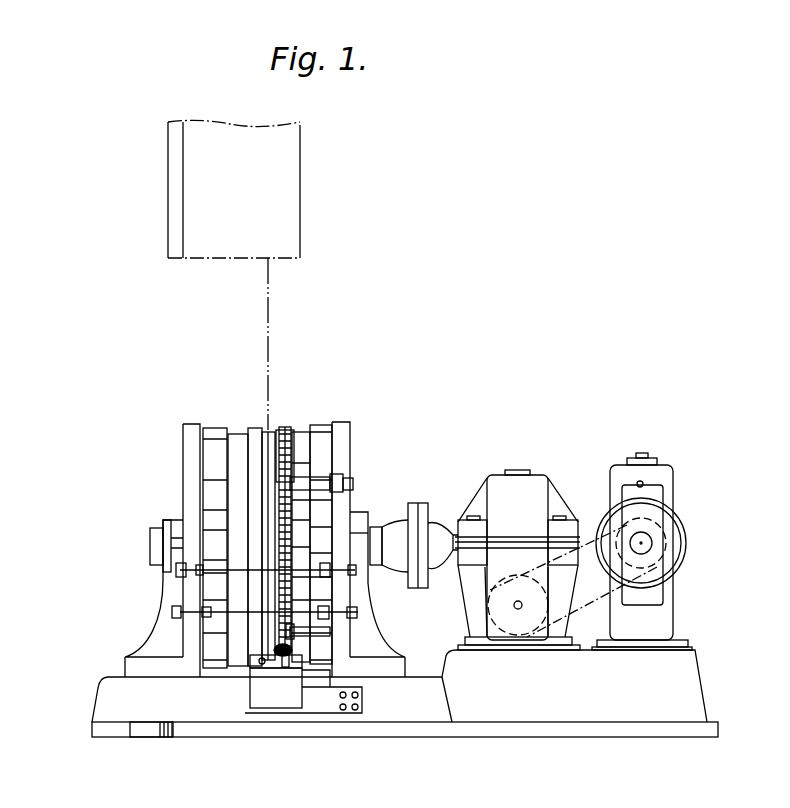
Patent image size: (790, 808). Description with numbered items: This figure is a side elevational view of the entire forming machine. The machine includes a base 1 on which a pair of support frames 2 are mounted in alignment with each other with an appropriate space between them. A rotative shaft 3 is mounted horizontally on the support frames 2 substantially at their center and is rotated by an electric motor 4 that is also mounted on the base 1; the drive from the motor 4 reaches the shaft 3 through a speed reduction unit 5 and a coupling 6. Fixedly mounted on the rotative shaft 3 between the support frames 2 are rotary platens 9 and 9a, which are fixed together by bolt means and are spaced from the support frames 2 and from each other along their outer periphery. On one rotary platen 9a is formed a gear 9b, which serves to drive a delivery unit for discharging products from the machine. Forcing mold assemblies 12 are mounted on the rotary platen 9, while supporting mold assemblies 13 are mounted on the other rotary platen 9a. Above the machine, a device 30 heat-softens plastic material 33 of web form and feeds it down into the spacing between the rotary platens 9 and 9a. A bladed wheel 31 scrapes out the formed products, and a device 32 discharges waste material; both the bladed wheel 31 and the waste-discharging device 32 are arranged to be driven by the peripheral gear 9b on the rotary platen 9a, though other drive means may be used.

The base 1 is at (397, 713).
The support frames 2 is at (190, 498).
The rotative shaft 3 is at (150, 540).
The electric motor 4 is at (683, 528).
The speed reduction unit 5 is at (533, 483).
The coupling 6 is at (423, 502).
The rotary platen 9 is at (266, 453).
The rotary platen 9a is at (300, 440).
The gear 9b is at (287, 428).
The forcing mold assemblies 12 is at (210, 468).
The supporting mold assemblies 13 is at (322, 446).
The heat-softening and feeding device 30 is at (296, 186).
The bladed wheel 31 is at (236, 455).
The waste-discharging device 32 is at (273, 698).
The plastic material 33 is at (269, 300).